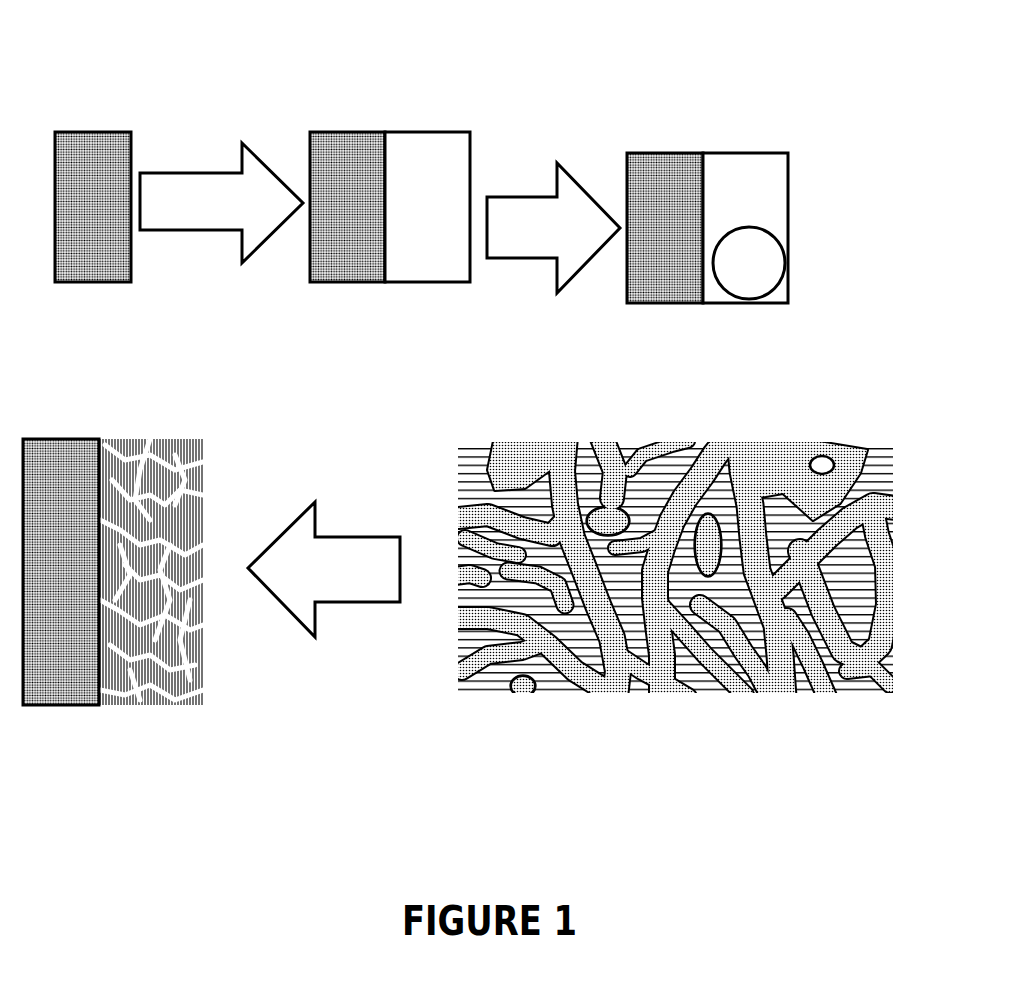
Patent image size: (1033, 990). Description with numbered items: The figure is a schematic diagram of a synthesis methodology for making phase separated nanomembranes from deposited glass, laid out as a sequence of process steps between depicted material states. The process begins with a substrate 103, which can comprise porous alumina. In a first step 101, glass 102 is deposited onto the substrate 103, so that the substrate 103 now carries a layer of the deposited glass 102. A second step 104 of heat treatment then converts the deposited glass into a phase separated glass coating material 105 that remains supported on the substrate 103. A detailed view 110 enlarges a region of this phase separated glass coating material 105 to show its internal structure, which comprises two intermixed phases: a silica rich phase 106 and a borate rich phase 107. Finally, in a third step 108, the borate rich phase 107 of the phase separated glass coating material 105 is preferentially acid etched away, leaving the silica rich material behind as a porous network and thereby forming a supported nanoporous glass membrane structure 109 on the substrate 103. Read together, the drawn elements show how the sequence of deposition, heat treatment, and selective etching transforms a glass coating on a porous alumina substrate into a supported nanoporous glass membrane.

The first step 101 is at (221, 203).
The glass 102 is at (440, 180).
The substrate 103 is at (103, 152).
The second step 104 is at (553, 228).
The phase separated glass coating material 105 is at (743, 195).
The silica rich phase 106 is at (563, 685).
The borate rich phase 107 is at (663, 685).
The third step 108 is at (324, 569).
The supported nanoporous glass membrane structure 109 is at (80, 735).
The detailed view 110 is at (675, 482).